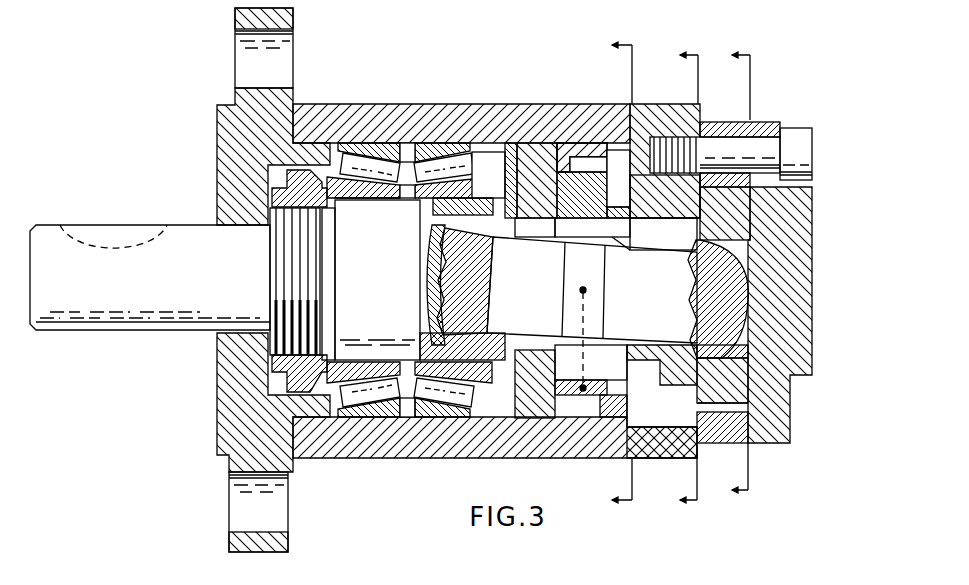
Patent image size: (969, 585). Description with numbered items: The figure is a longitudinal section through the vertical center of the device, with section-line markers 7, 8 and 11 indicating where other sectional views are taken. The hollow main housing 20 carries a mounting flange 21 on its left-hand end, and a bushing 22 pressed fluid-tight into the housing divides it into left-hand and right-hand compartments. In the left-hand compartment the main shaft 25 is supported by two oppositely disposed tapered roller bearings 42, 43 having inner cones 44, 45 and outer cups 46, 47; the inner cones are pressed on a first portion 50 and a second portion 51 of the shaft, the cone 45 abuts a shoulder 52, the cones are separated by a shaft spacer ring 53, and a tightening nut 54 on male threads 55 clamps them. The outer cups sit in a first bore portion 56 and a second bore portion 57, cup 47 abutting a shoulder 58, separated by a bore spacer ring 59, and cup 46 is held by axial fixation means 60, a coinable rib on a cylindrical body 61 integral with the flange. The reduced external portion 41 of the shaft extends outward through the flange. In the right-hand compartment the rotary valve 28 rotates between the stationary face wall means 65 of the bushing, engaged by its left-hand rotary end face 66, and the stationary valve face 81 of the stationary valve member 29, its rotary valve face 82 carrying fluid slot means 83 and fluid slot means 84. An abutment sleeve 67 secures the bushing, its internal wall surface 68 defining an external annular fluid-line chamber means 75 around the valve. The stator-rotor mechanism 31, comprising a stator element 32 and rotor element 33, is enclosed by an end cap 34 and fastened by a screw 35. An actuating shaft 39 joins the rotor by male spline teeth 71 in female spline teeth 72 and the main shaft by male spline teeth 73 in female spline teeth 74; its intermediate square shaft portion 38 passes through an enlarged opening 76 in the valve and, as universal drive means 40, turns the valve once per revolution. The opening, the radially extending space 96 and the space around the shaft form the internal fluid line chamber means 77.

The main housing 20 is at (505, 120).
The mounting flange 21 is at (288, 110).
The bushing 22 is at (535, 150).
The main shaft 25 is at (362, 279).
The rotary valve 28 is at (572, 204).
The stationary valve member 29 is at (660, 118).
The stator-rotor mechanism 31 is at (718, 130).
The stator element 32 is at (720, 445).
The rotor element 33 is at (735, 386).
The end cap 34 is at (795, 250).
The screw 35 is at (795, 128).
The intermediate square shaft portion 38 is at (574, 264).
The actuating shaft 39 is at (657, 255).
The universal drive means 40 is at (590, 316).
The reduced external portion 41 is at (118, 328).
The tapered roller bearing 42 is at (373, 155).
The tapered roller bearing 43 is at (448, 168).
The inner cone 44 is at (355, 198).
The inner cone 45 is at (421, 198).
The outer cup 46 is at (365, 165).
The outer cup 47 is at (408, 160).
The first portion 50 is at (463, 208).
The second portion 51 is at (388, 198).
The shoulder 52 is at (488, 175).
The shaft spacer ring 53 is at (407, 198).
The tightening nut 54 is at (285, 185).
The male threads 55 is at (285, 257).
The first bore portion 56 is at (437, 418).
The second bore portion 57 is at (365, 415).
The shoulder 58 is at (470, 410).
The bore spacer ring 59 is at (407, 415).
The axial fixation means 60 is at (333, 418).
The cylindrical body 61 is at (312, 425).
The stationary face wall means 65 is at (555, 188).
The left-hand rotary end face 66 is at (562, 172).
The abutment sleeve 67 is at (590, 410).
The internal wall surface 68 is at (573, 398).
The male spline teeth 71 is at (718, 349).
The female spline teeth 72 is at (750, 236).
The male spline teeth 73 is at (488, 333).
The female spline teeth 74 is at (500, 345).
The external annular fluid-line chamber means 75 is at (590, 168).
The enlarged opening 76 is at (613, 233).
The internal fluid line chamber means 77 is at (582, 239).
The stationary valve face 81 is at (628, 212).
The rotary valve face 82 is at (633, 190).
The fluid slot means 83 is at (623, 175).
The fluid slot means 84 is at (617, 385).
The radially extending space 96 is at (535, 228).
The section line 7- 7 is at (732, 272).
The section line 8- 8 is at (681, 272).
The section line 11- 11 is at (608, 273).